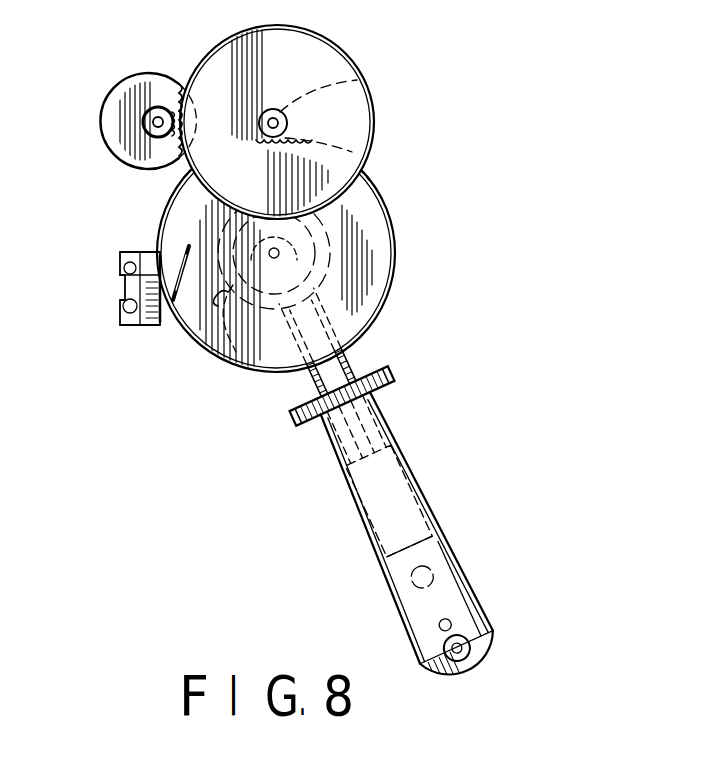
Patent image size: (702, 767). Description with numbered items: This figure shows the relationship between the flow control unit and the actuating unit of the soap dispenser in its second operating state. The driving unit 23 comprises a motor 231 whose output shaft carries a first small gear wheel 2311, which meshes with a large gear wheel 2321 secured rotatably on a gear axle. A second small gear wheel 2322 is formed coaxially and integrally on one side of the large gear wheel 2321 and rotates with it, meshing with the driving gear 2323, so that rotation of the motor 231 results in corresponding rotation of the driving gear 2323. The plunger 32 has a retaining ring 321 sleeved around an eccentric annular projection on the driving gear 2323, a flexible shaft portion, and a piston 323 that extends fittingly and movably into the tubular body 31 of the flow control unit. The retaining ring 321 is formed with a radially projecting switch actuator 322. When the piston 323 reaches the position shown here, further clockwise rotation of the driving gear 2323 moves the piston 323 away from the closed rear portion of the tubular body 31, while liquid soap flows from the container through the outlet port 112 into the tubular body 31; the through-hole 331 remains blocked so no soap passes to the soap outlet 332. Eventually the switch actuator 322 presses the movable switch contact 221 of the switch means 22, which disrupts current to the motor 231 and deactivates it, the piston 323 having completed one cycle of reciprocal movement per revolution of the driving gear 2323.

The driving unit 23 is at (268, 195).
The motor 231 is at (125, 93).
The first small gear wheel 2311 is at (152, 108).
The large gear wheel 2321 is at (358, 140).
The second small gear wheel 2322 is at (357, 80).
The driving gear 2323 is at (376, 271).
The switch means 22 is at (156, 326).
The movable switch contact 221 is at (184, 246).
The plunger 32 is at (381, 483).
The retaining ring 321 is at (317, 342).
The switch actuator 322 is at (224, 318).
The piston 323 is at (318, 446).
The tubular body 31 is at (406, 537).
The through-hole 331 is at (445, 625).
The soap outlet 332 is at (457, 648).
The outlet port 112 is at (422, 576).